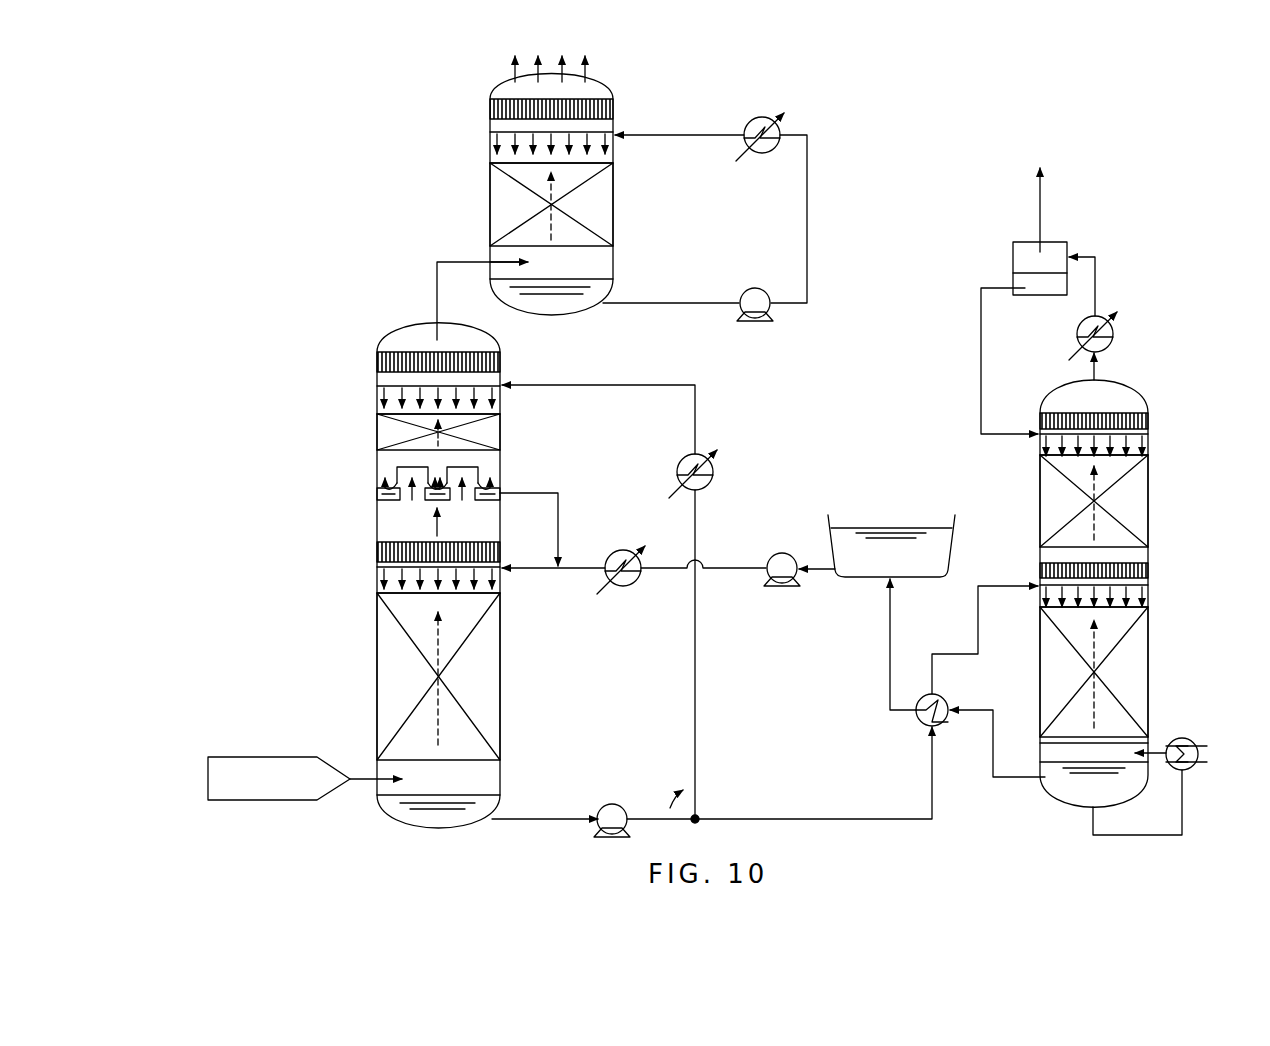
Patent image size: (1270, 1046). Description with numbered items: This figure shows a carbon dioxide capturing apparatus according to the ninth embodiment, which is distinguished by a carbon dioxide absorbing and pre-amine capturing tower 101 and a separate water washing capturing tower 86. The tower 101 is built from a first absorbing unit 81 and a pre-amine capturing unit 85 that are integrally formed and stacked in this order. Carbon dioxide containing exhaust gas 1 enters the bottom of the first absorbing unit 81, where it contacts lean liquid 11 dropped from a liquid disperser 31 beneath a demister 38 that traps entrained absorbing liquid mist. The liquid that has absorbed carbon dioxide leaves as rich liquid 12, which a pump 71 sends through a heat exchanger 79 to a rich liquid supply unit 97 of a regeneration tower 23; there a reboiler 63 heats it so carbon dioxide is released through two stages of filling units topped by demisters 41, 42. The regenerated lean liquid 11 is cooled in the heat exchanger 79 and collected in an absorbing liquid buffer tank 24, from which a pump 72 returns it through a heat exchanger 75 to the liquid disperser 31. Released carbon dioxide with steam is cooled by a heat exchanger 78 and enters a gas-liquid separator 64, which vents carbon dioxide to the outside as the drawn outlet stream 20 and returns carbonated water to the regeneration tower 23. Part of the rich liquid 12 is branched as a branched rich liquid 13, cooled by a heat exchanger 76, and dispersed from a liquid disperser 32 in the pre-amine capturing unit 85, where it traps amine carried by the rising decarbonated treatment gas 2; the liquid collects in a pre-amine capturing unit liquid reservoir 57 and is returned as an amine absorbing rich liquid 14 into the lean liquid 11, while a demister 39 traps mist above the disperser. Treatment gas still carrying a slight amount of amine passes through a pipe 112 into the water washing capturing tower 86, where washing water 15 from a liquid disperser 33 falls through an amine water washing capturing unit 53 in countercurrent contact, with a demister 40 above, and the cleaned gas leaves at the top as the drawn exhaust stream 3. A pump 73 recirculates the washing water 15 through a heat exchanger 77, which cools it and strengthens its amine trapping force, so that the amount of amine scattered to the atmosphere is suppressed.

The carbon dioxide containing exhaust gas 1 is at (262, 757).
The decarbonated treatment gas 2 is at (432, 527).
The exhaust gas 3 is at (515, 68).
The lean liquid 11 is at (530, 571).
The rich liquid 12 is at (548, 819).
The branched rich liquid 13 is at (695, 677).
The amine absorbing rich liquid 14 is at (558, 523).
The washing water 15 is at (807, 212).
The product outlet 20 is at (1040, 191).
The regeneration tower 23 is at (1160, 483).
The absorbing liquid buffer tank 24 is at (893, 560).
The liquid disperser 31 is at (380, 574).
The liquid disperser 32 is at (380, 390).
The liquid disperser 33 is at (492, 142).
The demister 38 is at (380, 553).
The demister 39 is at (380, 362).
The demister 40 is at (490, 109).
The demister 41 is at (1040, 570).
The demister 42 is at (1148, 421).
The amine water washing capturing unit 53 is at (500, 207).
The pre-amine capturing unit liquid reservoir 57 is at (500, 490).
The reboiler 63 is at (1183, 738).
The gas-liquid separator 64 is at (1000, 258).
The pump 71 is at (612, 804).
The pump 72 is at (781, 553).
The pump 73 is at (755, 287).
The heat exchanger 75 is at (618, 588).
The heat exchanger 76 is at (715, 473).
The heat exchanger 77 is at (747, 120).
The heat exchanger 78 is at (1113, 335).
The heat exchanger 79 is at (945, 698).
The first absorbing unit 81 is at (385, 668).
The pre-amine capturing unit 85 is at (388, 430).
The water washing capturing tower 86 is at (415, 170).
The rich liquid supply unit 97 is at (1150, 595).
The carbon dioxide absorbing and pre-amine capturing tower 101 is at (173, 518).
The pipe 112 is at (437, 293).